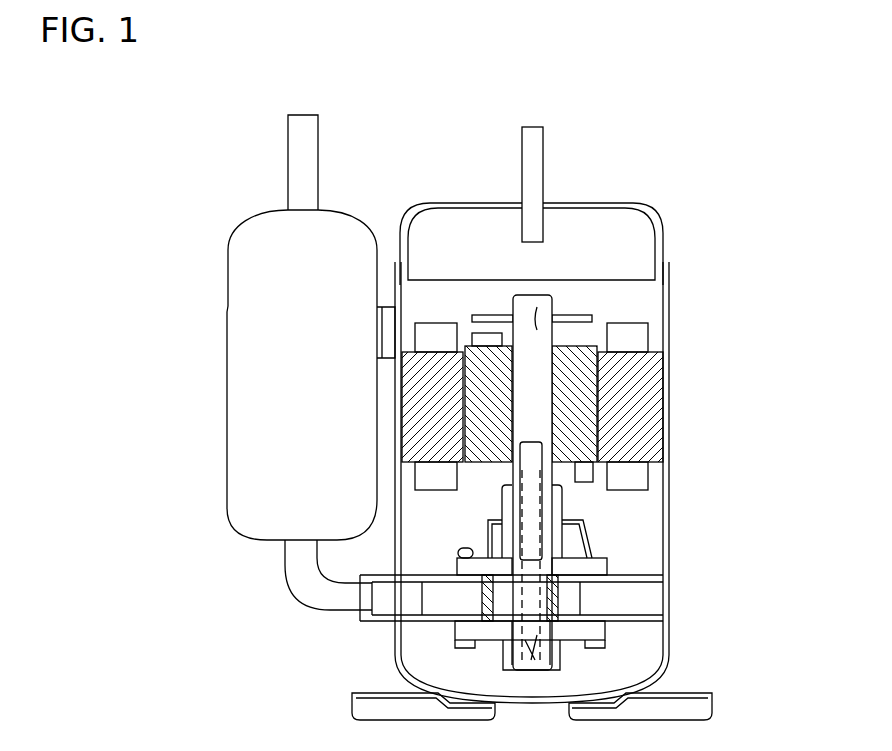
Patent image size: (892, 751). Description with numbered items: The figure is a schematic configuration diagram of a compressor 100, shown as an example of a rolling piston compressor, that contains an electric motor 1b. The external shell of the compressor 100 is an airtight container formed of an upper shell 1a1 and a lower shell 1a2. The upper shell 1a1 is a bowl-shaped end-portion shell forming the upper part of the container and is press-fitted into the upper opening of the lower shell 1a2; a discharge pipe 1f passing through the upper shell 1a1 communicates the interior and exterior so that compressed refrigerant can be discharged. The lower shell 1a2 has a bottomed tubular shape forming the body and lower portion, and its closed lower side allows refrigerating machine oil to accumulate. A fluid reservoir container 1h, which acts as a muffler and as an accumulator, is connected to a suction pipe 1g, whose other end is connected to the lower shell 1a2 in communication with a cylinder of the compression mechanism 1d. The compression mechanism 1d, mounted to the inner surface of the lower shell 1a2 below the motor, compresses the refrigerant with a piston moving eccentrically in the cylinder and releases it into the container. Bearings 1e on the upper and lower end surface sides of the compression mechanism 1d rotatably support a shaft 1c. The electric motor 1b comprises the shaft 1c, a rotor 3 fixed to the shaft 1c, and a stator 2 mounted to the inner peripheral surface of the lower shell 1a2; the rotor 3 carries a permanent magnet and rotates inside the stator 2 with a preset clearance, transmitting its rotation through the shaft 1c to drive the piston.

The compressor 100 is at (190, 165).
The upper shell 1a1 is at (655, 225).
The lower shell 1a2 is at (669, 508).
The electric motor 1b is at (603, 402).
The shaft 1c is at (540, 297).
The compression mechanism 1d is at (540, 598).
The bearings 1e is at (573, 570).
The discharge pipe 1f is at (532, 162).
The suction pipe 1g is at (324, 578).
The fluid reservoir container 1h is at (272, 420).
The stator 2 is at (633, 392).
The rotor 3 is at (580, 418).